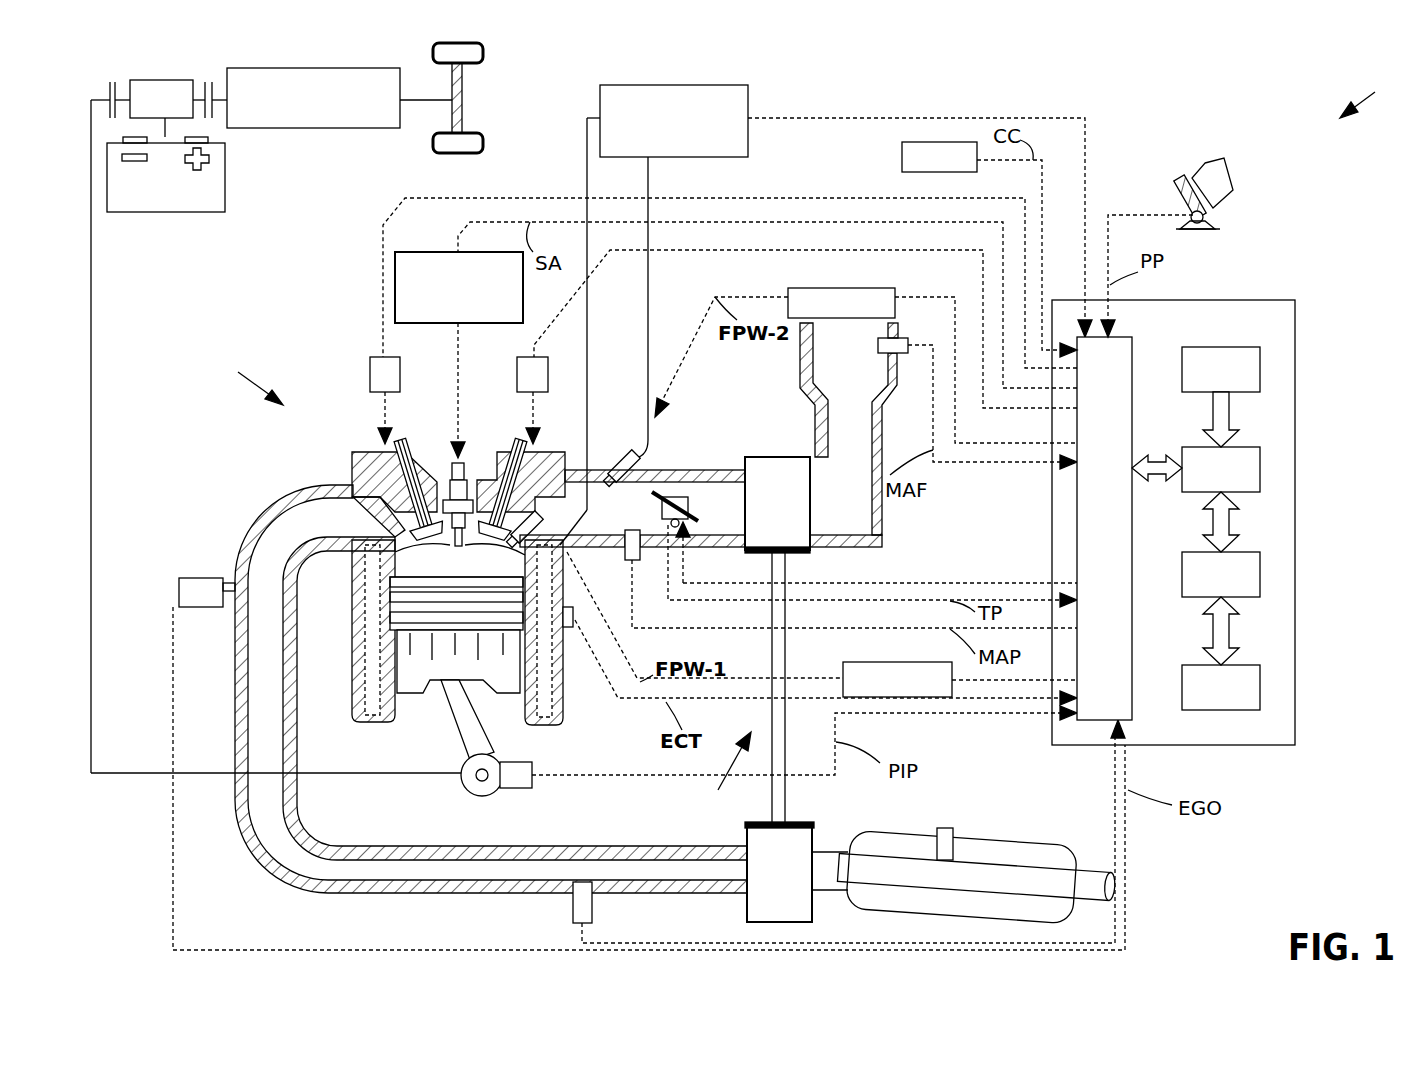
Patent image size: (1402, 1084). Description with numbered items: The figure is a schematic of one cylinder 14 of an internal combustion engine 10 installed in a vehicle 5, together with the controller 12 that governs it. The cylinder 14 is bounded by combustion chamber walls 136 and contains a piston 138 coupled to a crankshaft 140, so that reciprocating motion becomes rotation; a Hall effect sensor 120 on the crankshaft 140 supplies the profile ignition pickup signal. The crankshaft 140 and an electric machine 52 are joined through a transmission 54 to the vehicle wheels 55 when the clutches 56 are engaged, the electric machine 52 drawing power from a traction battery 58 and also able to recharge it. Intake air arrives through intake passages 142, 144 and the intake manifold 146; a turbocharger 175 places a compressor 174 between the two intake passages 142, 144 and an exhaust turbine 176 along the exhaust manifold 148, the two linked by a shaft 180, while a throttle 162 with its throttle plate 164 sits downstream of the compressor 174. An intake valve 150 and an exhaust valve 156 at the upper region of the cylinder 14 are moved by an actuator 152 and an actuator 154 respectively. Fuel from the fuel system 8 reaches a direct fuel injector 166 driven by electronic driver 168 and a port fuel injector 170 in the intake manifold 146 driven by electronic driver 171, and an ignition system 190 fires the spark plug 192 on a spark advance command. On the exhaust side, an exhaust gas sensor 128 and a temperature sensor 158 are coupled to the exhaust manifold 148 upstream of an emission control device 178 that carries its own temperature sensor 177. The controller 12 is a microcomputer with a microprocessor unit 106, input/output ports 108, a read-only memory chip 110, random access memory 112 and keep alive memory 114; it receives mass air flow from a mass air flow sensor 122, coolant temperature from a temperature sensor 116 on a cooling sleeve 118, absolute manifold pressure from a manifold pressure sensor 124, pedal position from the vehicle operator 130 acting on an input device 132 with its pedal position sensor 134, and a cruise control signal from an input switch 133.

The vehicle 5 is at (1368, 95).
The fuel system 8 is at (710, 86).
The internal combustion engine 10 is at (241, 380).
The controller 12 is at (1295, 302).
The cylinder 14 is at (392, 558).
The electric machine 52 is at (165, 80).
The transmission 54 is at (378, 128).
The vehicle wheels 55 is at (462, 155).
The clutch 56 is at (110, 88).
The traction battery 58 is at (165, 212).
The microprocessor unit 106 is at (1260, 466).
The input/output ports 108 is at (1135, 345).
The read-only memory chip 110 is at (1260, 368).
The random access memory 112 is at (1260, 577).
The keep alive memory 114 is at (1260, 690).
The temperature sensor 116 is at (570, 625).
The cooling sleeve 118 is at (563, 693).
The Hall effect sensor 120 is at (520, 790).
The mass air flow sensor 122 is at (905, 338).
The MAP sensor 124 is at (634, 562).
The exhaust gas sensor 128 is at (179, 585).
The vehicle operator 130 is at (1240, 172).
The input device 132 is at (1180, 190).
The input switch 133 is at (902, 152).
The pedal position sensor 134 is at (1210, 218).
The combustion chamber walls 136 is at (397, 707).
The piston 138 is at (440, 665).
The crankshaft 140 is at (470, 796).
The intake passage 142 is at (848, 435).
The intake passage 144 is at (655, 508).
The intake manifold 146 is at (585, 522).
The exhaust manifold 148 is at (491, 689).
The intake valve 150 is at (500, 525).
The actuator 152 is at (517, 377).
The actuator 154 is at (370, 380).
The exhaust valve 156 is at (352, 482).
The temperature sensor 158 is at (573, 905).
The throttle 162 is at (690, 492).
The throttle plate 164 is at (657, 490).
The fuel injector 166 is at (530, 545).
The electronic driver 168 is at (942, 662).
The fuel injector 170 is at (624, 452).
The electronic driver 171 is at (790, 288).
The compressor 174 is at (777, 505).
The turbocharger 175 is at (723, 767).
The exhaust turbine 176 is at (779, 872).
The temperature sensor 177 is at (950, 828).
The emission control device 178 is at (1035, 850).
The shaft 180 is at (790, 787).
The ignition system 190 is at (443, 252).
The spark plug 192 is at (455, 488).